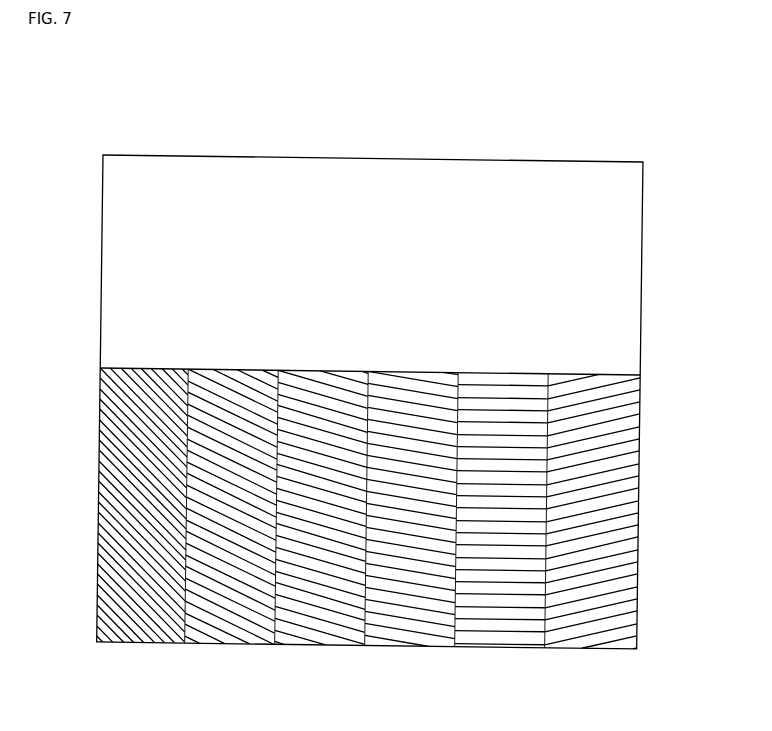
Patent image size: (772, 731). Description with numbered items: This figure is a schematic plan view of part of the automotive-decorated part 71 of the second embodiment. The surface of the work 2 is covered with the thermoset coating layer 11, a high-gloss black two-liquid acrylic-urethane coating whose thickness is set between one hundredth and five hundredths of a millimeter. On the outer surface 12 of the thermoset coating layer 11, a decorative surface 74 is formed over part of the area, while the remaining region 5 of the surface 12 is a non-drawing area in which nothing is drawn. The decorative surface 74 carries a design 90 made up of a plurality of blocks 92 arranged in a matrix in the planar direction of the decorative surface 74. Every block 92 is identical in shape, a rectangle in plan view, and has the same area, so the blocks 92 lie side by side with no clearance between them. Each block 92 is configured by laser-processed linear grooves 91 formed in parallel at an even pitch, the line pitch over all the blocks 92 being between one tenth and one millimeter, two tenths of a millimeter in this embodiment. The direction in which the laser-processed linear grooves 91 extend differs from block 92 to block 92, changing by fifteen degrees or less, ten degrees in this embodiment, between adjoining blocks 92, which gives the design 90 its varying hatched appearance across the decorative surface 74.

The work 2 is at (646, 203).
The region 5 is at (371, 275).
The thermoset coating layer 11 is at (121, 232).
The surface 12 is at (131, 189).
The automotive-decorated part 71 is at (679, 119).
The decorative surface 74 is at (608, 593).
The design 90 is at (366, 506).
The laser-processed linear grooves 91 is at (107, 392).
The block 92 is at (152, 392).